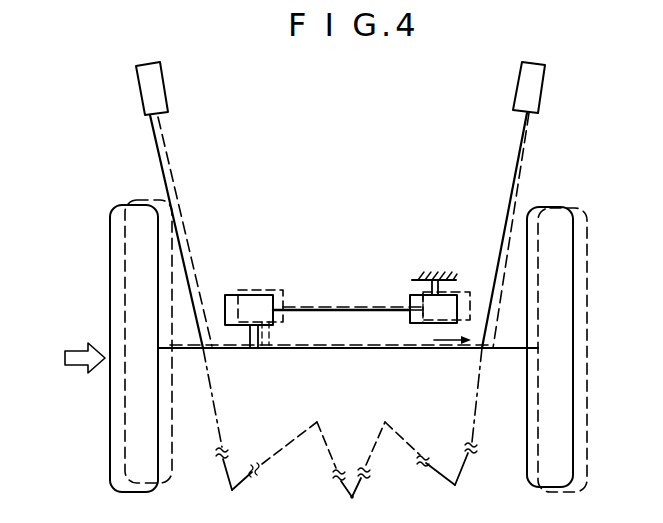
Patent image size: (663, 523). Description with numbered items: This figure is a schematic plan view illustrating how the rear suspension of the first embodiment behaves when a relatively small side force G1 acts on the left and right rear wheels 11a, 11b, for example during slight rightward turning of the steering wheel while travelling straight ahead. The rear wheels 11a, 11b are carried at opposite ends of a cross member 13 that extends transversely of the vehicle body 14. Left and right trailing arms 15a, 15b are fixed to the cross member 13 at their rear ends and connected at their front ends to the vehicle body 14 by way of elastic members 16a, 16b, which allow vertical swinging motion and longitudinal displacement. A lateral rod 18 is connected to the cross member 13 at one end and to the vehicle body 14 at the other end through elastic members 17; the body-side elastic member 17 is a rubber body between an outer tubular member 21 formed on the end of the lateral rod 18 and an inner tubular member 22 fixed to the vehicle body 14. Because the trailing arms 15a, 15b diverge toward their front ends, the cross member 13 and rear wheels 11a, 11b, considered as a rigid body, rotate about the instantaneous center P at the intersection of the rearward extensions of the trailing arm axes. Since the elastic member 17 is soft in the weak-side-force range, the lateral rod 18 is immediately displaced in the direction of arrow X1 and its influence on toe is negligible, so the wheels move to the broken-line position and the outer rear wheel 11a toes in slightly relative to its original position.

The left rear wheel 11a is at (123, 494).
The right rear wheel 11b is at (538, 490).
The cross member 13 is at (283, 352).
The vehicle body 14 is at (423, 274).
The left trailing arm 15a is at (185, 248).
The right trailing arm 15b is at (508, 207).
The elastic member 16a is at (168, 92).
The elastic member 16b is at (541, 96).
The elastic member 17 is at (427, 326).
The lateral rod 18 is at (322, 306).
The outer tubular member 21 is at (408, 315).
The inner tubular member 22 is at (428, 289).
The instantaneous center P is at (354, 498).
The direction of lateral rod displacement X1 is at (450, 348).
The side force G1 is at (69, 358).